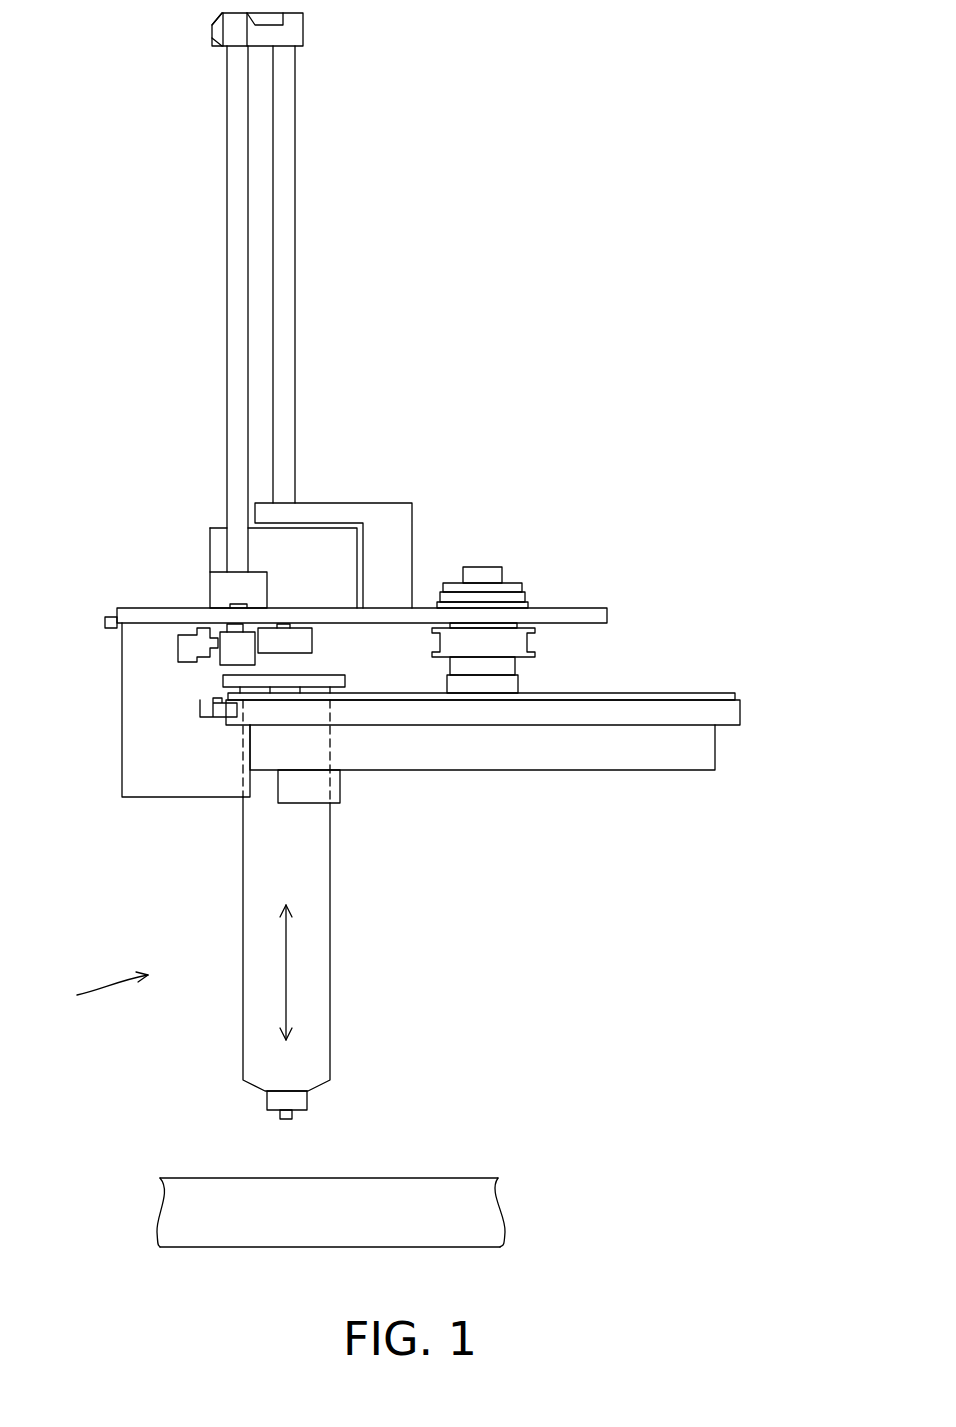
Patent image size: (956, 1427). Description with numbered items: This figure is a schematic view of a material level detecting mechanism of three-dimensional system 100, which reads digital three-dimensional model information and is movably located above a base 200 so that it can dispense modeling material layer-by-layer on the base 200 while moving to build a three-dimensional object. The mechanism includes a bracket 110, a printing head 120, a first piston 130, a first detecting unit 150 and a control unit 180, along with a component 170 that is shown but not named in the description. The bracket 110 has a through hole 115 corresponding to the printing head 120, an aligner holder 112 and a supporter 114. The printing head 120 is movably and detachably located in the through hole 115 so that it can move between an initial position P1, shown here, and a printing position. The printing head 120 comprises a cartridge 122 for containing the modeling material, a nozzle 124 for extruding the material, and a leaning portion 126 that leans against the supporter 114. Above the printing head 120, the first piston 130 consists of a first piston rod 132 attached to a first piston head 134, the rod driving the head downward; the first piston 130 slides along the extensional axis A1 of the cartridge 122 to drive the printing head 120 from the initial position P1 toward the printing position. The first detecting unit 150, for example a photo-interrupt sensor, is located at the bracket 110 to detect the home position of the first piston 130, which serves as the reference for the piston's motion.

The material level detecting mechanism of 3-D system 100 is at (845, 1248).
The bracket 110 is at (120, 650).
The aligner holder 112 is at (305, 795).
The supporter 114 is at (688, 748).
The through hole 115 is at (258, 745).
The printing head 120 is at (328, 974).
The cartridge 122 is at (332, 1052).
The nozzle 124 is at (292, 1117).
The leaning portion 126 is at (227, 680).
The first piston 130 is at (313, 633).
The first piston rod 132 is at (295, 358).
The first piston head 134 is at (313, 647).
The first detecting unit 150 is at (188, 645).
The adjusting knob 170 is at (482, 573).
The control unit 180 is at (318, 538).
The base 200 is at (183, 1215).
The extensional axis A1 is at (273, 972).
The initial position P1 is at (95, 991).